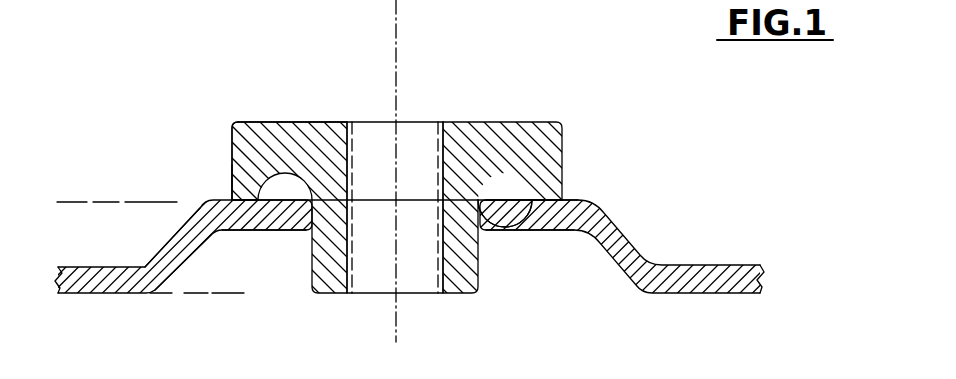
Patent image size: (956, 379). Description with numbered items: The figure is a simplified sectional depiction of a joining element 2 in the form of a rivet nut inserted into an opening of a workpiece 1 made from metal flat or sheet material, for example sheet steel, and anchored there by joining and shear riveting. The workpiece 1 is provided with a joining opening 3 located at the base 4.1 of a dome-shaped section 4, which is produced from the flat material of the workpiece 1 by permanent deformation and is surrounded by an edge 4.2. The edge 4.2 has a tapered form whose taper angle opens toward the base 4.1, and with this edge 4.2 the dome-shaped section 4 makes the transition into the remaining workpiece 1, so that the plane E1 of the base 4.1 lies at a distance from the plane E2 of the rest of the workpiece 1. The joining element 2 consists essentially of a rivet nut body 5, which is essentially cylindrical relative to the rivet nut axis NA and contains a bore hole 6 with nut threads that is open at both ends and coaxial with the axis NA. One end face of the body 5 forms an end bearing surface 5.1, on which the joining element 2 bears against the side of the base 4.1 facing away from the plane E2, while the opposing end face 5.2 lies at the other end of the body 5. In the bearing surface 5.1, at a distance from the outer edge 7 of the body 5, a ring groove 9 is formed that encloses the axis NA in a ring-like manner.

The workpiece 1 is at (640, 221).
The joining element 2 is at (568, 120).
The joining opening 3 is at (300, 225).
The dome-shaped section 4 is at (595, 191).
The base 4.1 is at (533, 217).
The edge 4.2 is at (180, 243).
The rivet nut body 5 is at (507, 140).
The end bearing surface 5.1 is at (232, 192).
The opposing end face 5.2 is at (290, 122).
The bore hole 6 is at (427, 122).
The outer edge 7 is at (232, 142).
The ring groove 9 is at (523, 177).
The rivet nut axis NA is at (419, 171).
The plane of the base E1 is at (118, 202).
The plane of the remaining workpiece E2 is at (202, 294).